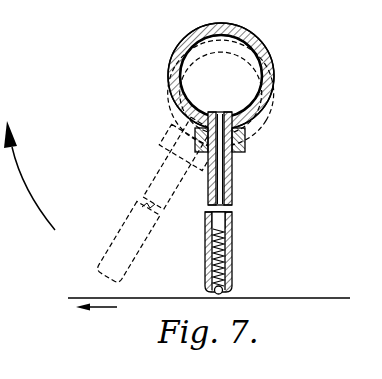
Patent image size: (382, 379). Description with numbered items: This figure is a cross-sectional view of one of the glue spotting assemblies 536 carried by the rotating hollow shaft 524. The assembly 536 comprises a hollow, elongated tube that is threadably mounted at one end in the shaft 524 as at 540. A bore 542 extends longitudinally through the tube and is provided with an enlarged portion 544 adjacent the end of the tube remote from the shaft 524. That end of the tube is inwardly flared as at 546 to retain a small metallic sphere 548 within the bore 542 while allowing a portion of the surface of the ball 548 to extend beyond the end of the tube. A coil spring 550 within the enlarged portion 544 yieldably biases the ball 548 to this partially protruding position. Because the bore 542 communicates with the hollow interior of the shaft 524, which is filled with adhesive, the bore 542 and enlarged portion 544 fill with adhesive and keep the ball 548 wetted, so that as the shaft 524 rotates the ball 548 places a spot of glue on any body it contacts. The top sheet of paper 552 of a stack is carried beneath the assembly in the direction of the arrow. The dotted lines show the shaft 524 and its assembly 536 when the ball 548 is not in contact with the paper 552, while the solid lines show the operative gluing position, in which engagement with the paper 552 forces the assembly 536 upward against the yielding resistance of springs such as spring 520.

The spring 520 is at (233, 193).
The hollow shaft 524 is at (182, 37).
The glue spotting assembly 536 is at (238, 174).
The threaded mounting 540 is at (262, 116).
The bore 542 is at (209, 200).
The enlarged portion 544 is at (233, 272).
The inwardly flared end 546 is at (222, 294).
The metallic sphere 548 is at (226, 299).
The coil spring 550 is at (232, 238).
The top sheet of paper 552 is at (130, 298).